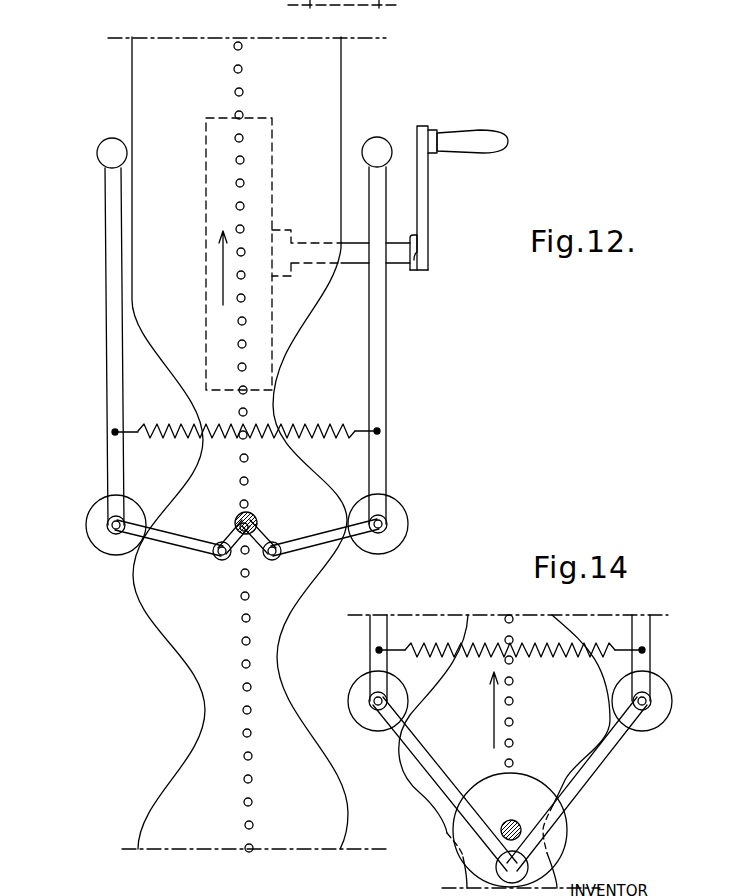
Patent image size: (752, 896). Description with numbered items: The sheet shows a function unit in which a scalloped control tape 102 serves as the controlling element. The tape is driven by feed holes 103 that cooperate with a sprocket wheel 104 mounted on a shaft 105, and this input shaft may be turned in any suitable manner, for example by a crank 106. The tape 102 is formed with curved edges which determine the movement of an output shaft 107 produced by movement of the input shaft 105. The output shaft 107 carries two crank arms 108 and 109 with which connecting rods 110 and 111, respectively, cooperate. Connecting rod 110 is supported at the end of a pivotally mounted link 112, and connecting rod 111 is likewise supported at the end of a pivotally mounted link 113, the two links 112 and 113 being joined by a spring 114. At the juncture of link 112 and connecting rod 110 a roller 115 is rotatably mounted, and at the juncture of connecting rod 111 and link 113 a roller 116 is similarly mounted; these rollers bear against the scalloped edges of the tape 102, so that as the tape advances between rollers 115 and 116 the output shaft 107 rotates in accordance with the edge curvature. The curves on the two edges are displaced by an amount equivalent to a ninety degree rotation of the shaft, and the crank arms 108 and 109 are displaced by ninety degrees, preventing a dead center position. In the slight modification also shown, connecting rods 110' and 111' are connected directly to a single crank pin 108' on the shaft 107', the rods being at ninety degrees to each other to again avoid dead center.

In FIG. 12, the control tape 102 is at (325, 88).
In FIG. 14, the control tape 102 is at (528, 628).
In FIG. 12, the feed holes 103 is at (234, 68).
In FIG. 12, the sprocket wheel 104 is at (257, 168).
In FIG. 12, the shaft 105 is at (400, 266).
In FIG. 12, the crank 106 is at (465, 141).
In FIG. 12, the output shaft 107 is at (272, 506).
In FIG. 12, the crank arm 108 is at (242, 513).
In FIG. 12, the crank arm 109 is at (248, 560).
In FIG. 12, the connecting rod 110 is at (169, 524).
In FIG. 12, the connecting rod 111 is at (325, 526).
In FIG. 12, the link 112 is at (111, 306).
In FIG. 12, the link 113 is at (378, 342).
In FIG. 12, the spring 114 is at (297, 427).
In FIG. 12, the roller 115 is at (95, 534).
In FIG. 12, the roller 116 is at (396, 508).
In FIG. 14, the shaft 107' is at (463, 842).
In FIG. 14, the crank pin 108' is at (557, 860).
In FIG. 14, the connecting rod 110' is at (445, 784).
In FIG. 14, the connecting rod 111' is at (587, 784).